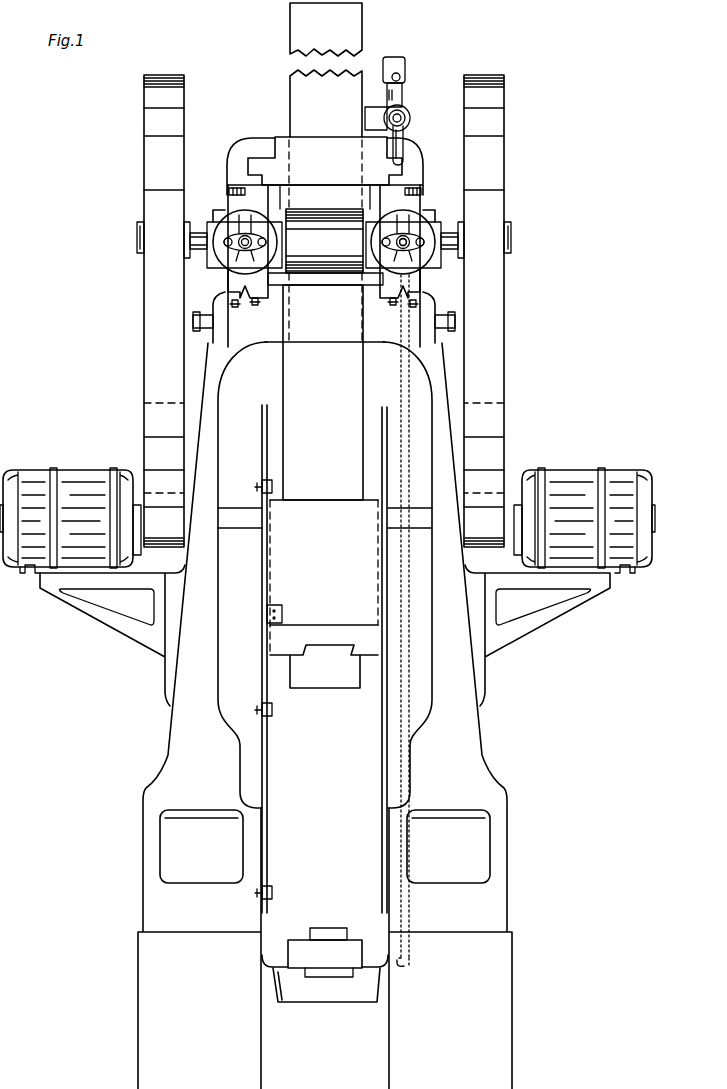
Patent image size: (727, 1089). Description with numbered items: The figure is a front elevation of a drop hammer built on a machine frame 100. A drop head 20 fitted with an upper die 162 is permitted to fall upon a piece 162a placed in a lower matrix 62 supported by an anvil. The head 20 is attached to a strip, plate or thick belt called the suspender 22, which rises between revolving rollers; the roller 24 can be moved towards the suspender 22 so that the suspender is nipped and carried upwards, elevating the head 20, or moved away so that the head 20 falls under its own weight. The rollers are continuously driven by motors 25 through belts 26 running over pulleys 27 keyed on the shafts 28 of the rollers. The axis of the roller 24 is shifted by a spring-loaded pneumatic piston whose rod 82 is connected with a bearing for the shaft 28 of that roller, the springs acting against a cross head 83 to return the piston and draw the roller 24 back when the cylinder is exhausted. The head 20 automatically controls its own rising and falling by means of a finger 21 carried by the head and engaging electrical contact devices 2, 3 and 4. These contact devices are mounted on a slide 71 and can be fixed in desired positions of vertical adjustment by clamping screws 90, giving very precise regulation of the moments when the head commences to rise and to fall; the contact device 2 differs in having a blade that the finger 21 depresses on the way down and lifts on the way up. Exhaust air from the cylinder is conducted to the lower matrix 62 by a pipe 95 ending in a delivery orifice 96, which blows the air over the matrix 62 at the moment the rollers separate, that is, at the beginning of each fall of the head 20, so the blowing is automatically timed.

The suspender 22 is at (300, 107).
The pulley 27 is at (150, 173).
The shaft 28 is at (198, 233).
The cross head 83 is at (408, 237).
The piston rod 82 is at (408, 248).
The roller 24 is at (357, 241).
The belt 26 is at (146, 456).
The motor 25 is at (42, 466).
The clamping screw 90 is at (257, 487).
The electrical contact device 4 is at (275, 487).
The drop head 20 is at (324, 577).
The finger 21 is at (265, 614).
The upper die 162 is at (324, 666).
The pipe 95 is at (410, 718).
The electrical contact device 3 is at (274, 708).
The machine frame 100 is at (176, 758).
The slide 71 is at (270, 834).
The electrical contact device 2 is at (273, 891).
The piece 162a is at (330, 933).
The lower matrix 62 is at (326, 971).
The delivery orifice 96 is at (401, 964).